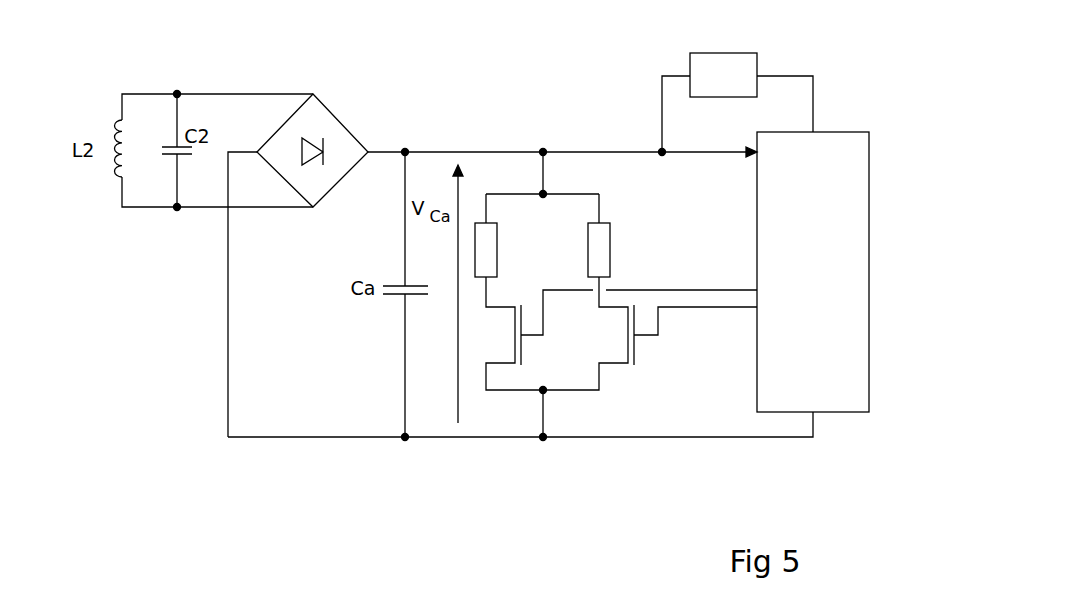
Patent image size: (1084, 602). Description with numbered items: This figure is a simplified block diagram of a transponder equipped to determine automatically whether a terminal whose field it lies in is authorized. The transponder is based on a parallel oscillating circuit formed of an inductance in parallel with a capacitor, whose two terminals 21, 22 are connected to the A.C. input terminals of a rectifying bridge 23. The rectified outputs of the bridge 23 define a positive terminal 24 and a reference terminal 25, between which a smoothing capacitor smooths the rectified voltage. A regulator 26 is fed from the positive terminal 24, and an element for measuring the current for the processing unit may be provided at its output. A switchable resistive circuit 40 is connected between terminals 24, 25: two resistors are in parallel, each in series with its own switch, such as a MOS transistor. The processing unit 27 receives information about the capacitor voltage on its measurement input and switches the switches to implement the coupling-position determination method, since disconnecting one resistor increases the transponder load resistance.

The terminal 21 is at (178, 92).
The terminal 22 is at (177, 207).
The rectifying bridge 23 is at (345, 127).
The positive terminal 24 is at (406, 151).
The reference terminal 25 is at (404, 441).
The regulator 26 is at (730, 53).
The processing unit 27 is at (845, 132).
The switchable resistive circuit 40 is at (533, 228).